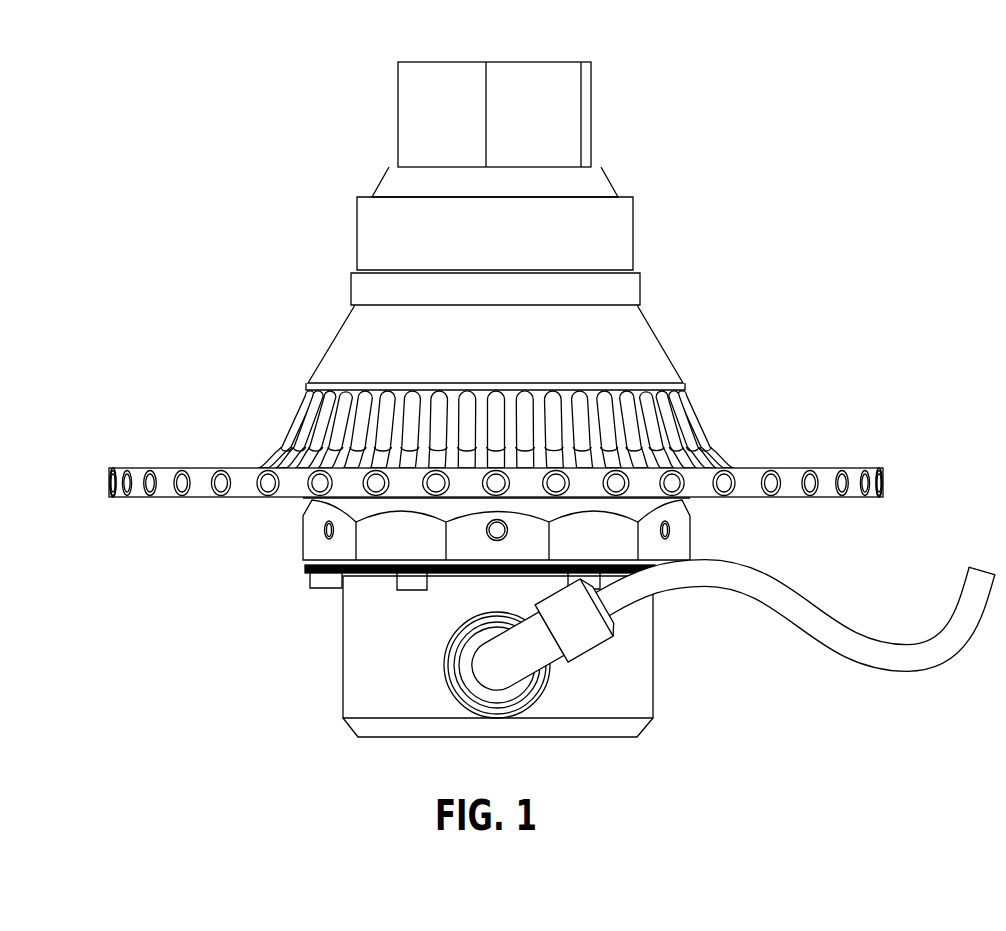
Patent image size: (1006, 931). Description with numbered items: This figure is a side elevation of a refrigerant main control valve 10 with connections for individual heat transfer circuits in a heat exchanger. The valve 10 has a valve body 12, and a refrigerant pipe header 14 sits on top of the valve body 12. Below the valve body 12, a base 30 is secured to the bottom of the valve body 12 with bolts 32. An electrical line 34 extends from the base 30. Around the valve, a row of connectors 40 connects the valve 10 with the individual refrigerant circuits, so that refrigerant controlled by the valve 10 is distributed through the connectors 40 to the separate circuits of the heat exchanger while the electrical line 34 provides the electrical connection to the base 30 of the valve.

The refrigerant main control valve 10 is at (692, 268).
The valve body 12 is at (663, 340).
The refrigerant pipe header 14 is at (591, 98).
The base 30 is at (343, 662).
The bolts 32 is at (312, 589).
The electrical line 34 is at (817, 602).
The connectors 40 is at (787, 468).